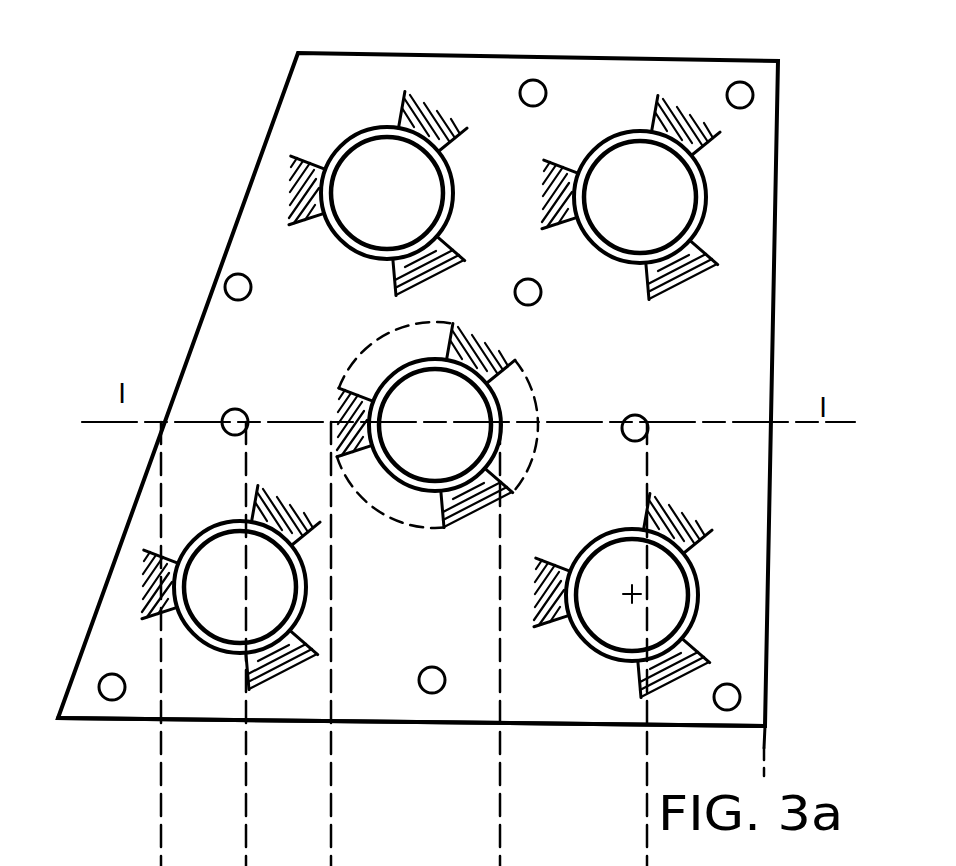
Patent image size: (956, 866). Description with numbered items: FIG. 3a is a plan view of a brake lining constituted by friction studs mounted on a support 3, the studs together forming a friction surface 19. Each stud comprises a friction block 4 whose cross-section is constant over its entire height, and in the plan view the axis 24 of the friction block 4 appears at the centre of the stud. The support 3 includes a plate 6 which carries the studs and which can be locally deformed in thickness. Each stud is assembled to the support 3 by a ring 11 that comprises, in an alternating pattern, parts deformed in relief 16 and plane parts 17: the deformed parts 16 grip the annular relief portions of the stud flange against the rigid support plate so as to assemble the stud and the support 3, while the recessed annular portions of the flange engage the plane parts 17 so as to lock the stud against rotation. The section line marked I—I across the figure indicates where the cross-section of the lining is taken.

The support 3 is at (150, 722).
The friction block 4 is at (680, 187).
The plate 6 is at (103, 630).
The ring 11 is at (532, 383).
The deformed part 16 is at (503, 347).
The plane part 17 is at (520, 413).
The friction surface 19 is at (675, 203).
The axis 24 is at (635, 593).